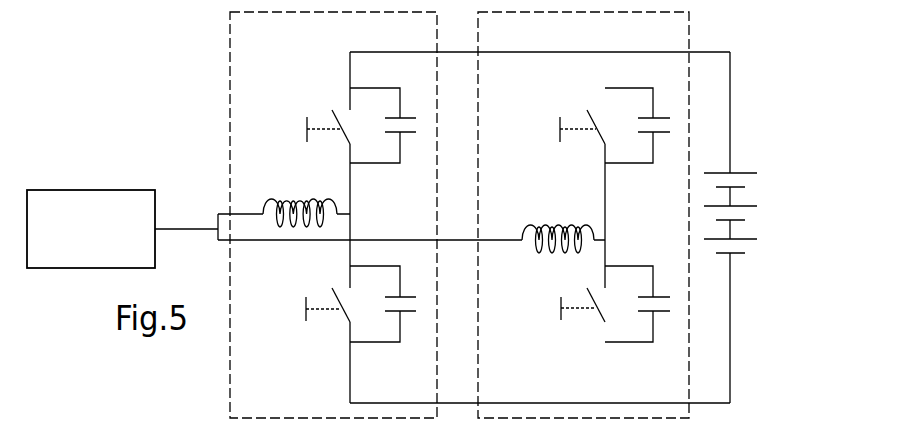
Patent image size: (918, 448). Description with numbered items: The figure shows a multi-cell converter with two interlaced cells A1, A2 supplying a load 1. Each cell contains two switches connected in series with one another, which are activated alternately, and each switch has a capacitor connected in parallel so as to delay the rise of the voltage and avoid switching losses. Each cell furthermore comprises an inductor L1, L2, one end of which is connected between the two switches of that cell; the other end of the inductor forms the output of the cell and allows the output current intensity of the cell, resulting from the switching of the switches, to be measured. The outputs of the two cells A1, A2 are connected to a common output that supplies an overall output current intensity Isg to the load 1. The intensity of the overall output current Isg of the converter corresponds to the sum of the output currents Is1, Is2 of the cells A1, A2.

The load 1 is at (105, 203).
The overall output current intensity Isg is at (186, 223).
The first cell A1 is at (264, 40).
The second cell A2 is at (516, 40).
The output current of the first cell Is1 is at (284, 206).
The output current of the second cell Is2 is at (411, 228).
The inductor of the first cell L1 is at (300, 202).
The inductor of the second cell L2 is at (558, 225).